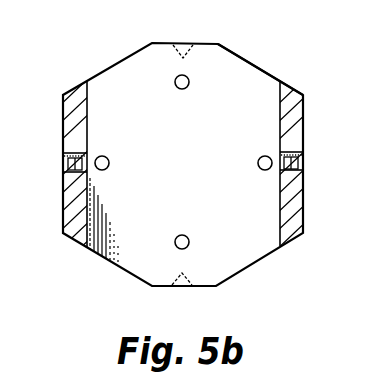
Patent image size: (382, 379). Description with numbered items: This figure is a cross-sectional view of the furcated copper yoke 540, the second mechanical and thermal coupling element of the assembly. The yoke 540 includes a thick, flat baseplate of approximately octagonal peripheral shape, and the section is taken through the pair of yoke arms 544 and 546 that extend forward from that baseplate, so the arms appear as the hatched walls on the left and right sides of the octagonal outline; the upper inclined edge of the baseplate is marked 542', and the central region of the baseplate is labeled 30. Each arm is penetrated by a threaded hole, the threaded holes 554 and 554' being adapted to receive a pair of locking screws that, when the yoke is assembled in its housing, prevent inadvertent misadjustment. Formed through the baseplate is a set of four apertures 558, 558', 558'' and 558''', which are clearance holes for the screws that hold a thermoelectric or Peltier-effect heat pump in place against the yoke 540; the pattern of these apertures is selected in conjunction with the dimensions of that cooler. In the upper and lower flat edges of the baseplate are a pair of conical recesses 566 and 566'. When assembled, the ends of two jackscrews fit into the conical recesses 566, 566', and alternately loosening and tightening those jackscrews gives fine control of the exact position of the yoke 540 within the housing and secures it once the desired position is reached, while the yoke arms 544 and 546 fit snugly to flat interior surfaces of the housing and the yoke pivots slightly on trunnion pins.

The furcated copper yoke 540 is at (320, 283).
The upper inclined side surface 542' is at (260, 57).
The yoke arm 544 is at (63, 134).
The yoke arm 546 is at (304, 134).
The threaded hole 554 is at (51, 168).
The threaded hole 554' is at (322, 167).
The aperture 558 is at (151, 85).
The aperture 558' is at (152, 241).
The aperture 558'' is at (132, 176).
The aperture 558''' is at (235, 176).
The conical recess 566 is at (181, 31).
The conical recess 566' is at (187, 300).
The center region 30 is at (183, 160).